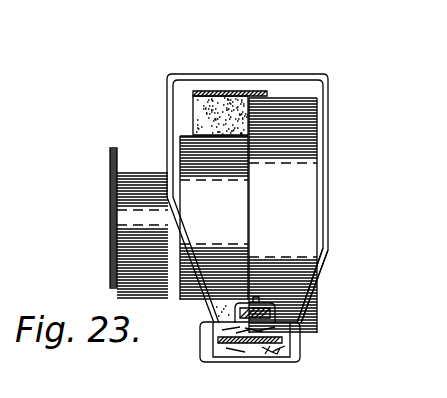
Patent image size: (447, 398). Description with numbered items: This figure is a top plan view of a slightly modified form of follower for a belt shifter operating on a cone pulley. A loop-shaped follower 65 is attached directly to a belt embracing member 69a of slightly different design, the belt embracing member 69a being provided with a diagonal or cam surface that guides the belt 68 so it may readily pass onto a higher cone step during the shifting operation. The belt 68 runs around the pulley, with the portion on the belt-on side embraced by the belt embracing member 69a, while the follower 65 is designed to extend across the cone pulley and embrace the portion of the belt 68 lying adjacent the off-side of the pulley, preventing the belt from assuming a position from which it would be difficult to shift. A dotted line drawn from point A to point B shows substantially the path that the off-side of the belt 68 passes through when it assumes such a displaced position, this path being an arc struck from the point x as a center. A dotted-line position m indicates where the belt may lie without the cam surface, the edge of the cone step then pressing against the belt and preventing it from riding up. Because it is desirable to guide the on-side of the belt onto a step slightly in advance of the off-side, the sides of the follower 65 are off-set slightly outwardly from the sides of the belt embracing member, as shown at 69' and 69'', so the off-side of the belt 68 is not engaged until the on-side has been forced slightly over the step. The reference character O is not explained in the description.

The follower 65 is at (221, 76).
The dotted line A— B is at (298, 87).
The dotted line A—B A is at (190, 114).
The spool O is at (179, 218).
The off-set side of the follower 69' is at (208, 257).
The off-set side of the follower 69'' is at (337, 244).
The belt embracing member 69a is at (287, 367).
The belt 68 is at (242, 346).
The dotted-line position of the belt m is at (262, 348).
The center point X x is at (288, 348).